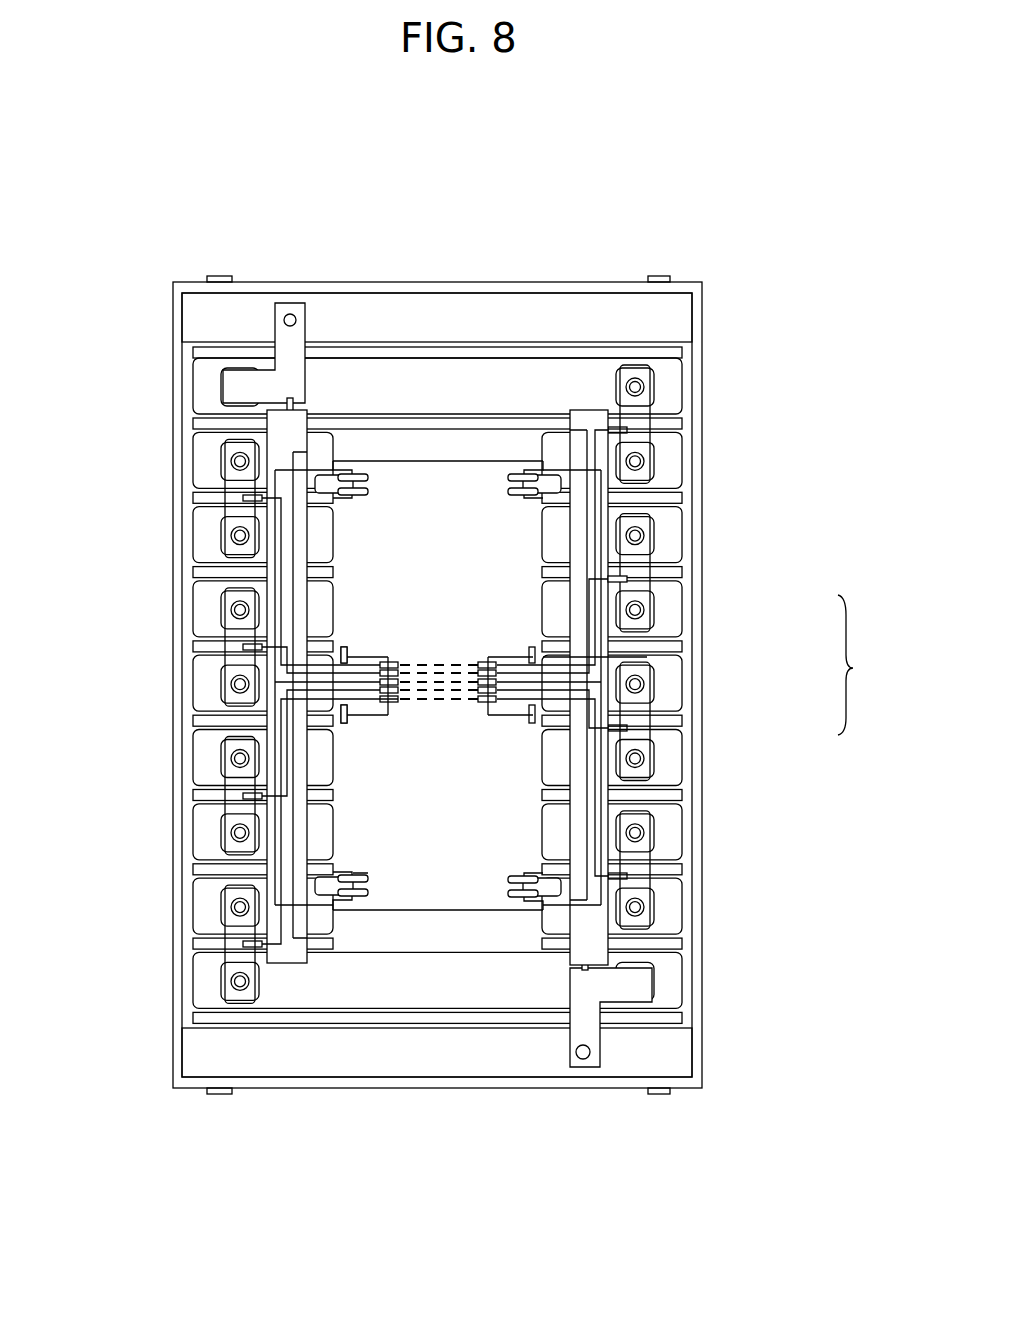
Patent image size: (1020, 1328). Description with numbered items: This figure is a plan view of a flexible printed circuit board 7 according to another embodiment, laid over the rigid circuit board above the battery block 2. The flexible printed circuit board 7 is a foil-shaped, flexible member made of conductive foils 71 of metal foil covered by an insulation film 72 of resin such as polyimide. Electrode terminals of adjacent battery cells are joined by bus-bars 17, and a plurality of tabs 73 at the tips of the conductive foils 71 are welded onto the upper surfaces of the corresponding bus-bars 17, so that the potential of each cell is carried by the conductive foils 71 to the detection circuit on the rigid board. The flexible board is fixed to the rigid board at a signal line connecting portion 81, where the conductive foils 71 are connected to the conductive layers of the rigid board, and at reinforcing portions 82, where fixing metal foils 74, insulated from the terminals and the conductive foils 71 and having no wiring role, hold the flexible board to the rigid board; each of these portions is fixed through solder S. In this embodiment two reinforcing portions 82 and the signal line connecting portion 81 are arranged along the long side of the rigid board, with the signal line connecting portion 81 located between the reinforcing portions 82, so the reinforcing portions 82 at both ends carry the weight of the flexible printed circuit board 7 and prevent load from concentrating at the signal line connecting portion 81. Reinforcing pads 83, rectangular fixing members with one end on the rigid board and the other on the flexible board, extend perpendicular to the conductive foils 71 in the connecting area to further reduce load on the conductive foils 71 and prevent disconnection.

The battery block 2 is at (715, 210).
The flexible printed circuit board 7 is at (859, 665).
The bus-bar 17 is at (642, 427).
The conductive foil 71 is at (633, 657).
The insulation film 72 is at (600, 798).
The tab 73 is at (617, 578).
The fixing metal foil 74 is at (317, 883).
The signal line connecting portion 81 is at (381, 625).
The reinforcing portion 82 is at (380, 452).
The reinforcing pad 83 is at (343, 655).
The solder S is at (388, 700).